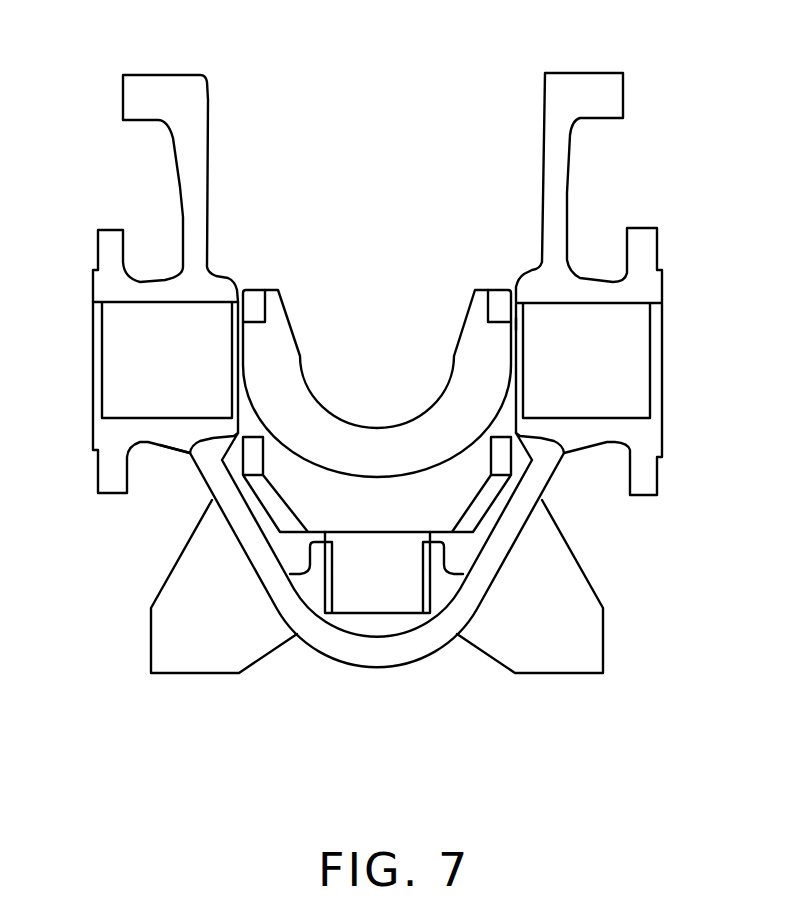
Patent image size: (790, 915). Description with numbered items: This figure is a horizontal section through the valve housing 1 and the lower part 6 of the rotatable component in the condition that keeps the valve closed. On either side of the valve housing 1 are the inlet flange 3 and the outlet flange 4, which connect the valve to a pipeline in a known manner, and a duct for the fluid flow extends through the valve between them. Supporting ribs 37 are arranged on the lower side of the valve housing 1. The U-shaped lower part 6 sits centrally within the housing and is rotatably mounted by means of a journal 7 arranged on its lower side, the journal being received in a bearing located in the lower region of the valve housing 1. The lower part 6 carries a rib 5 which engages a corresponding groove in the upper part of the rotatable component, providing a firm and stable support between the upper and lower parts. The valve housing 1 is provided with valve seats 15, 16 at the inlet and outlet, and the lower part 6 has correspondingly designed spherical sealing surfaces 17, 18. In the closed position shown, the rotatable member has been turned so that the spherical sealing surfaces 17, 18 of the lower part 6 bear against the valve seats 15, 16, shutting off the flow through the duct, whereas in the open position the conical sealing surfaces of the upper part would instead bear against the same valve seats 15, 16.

The valve housing 1 is at (131, 77).
The inlet flange 3 is at (647, 250).
The outlet flange 4 is at (103, 246).
The rib 5 is at (357, 442).
The U-shaped lower part 6 is at (293, 502).
The journal 7 is at (347, 600).
The valve seat 15 is at (523, 293).
The valve seat 16 is at (188, 454).
The spherical sealing surface 17 is at (520, 323).
The spherical sealing surface 18 is at (240, 292).
The supporting ribs 37 is at (603, 608).